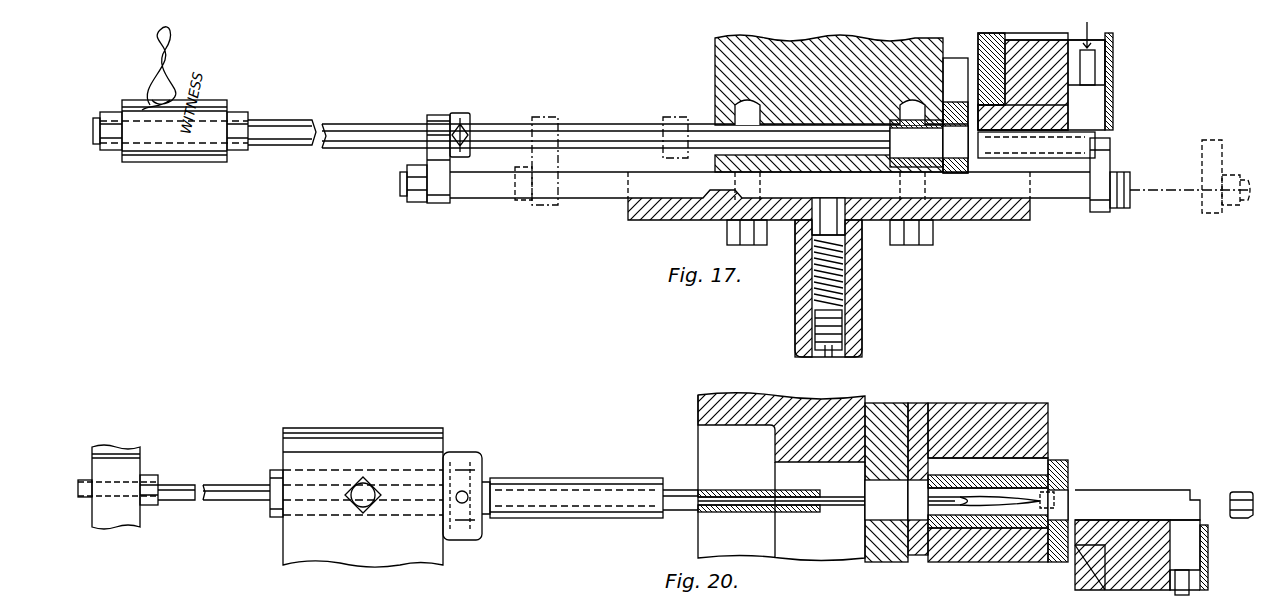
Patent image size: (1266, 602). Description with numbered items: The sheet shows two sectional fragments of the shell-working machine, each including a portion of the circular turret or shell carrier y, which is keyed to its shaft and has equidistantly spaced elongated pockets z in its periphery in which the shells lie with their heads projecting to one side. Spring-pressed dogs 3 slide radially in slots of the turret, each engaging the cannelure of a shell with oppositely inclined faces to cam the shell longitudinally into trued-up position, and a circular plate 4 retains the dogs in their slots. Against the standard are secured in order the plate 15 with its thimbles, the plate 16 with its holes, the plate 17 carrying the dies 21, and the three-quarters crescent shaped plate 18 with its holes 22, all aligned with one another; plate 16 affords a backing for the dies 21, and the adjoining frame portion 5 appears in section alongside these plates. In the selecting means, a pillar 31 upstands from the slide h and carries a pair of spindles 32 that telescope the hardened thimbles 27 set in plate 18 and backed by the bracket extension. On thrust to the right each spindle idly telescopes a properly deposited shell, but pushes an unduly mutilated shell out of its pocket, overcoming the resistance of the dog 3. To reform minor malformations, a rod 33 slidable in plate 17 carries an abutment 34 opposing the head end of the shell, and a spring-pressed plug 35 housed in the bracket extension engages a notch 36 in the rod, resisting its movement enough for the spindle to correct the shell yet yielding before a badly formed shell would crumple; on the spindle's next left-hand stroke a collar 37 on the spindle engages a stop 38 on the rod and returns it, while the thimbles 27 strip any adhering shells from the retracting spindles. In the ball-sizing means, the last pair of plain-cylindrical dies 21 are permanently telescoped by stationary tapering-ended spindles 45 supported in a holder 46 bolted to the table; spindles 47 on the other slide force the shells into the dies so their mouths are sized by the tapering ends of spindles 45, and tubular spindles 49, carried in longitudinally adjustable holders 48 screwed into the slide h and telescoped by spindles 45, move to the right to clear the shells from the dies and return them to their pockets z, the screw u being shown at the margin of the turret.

In FIG. 17, the pillar 31 is at (176, 162).
In FIG. 17, the spindles 32 is at (585, 130).
In FIG. 17, the rod 33 is at (1062, 200).
In FIG. 17, the abutment 34 is at (1112, 160).
In FIG. 17, the spring-pressed plug 35 is at (815, 288).
In FIG. 17, the notch 36 is at (850, 200).
In FIG. 17, the collar 37 is at (462, 113).
In FIG. 17, the stop 38 is at (436, 115).
In FIG. 17, the hardened thimbles 27 is at (905, 118).
In FIG. 17, the plate 18 is at (955, 115).
In FIG. 20, the plate 18 is at (1058, 460).
In FIG. 17, the spring-pressed dogs 3 is at (1041, 76).
In FIG. 20, the spring-pressed dogs 3 is at (1185, 557).
In FIG. 17, the circular plate 4 is at (1113, 110).
In FIG. 20, the circular plate 4 is at (1211, 557).
In FIG. 17, the turret y is at (1034, 77).
In FIG. 20, the turret y is at (1140, 525).
In FIG. 17, the pockets z is at (1033, 113).
In FIG. 20, the pockets z is at (1137, 505).
In FIG. 20, the holder 46 is at (118, 452).
In FIG. 20, the slide h is at (364, 430).
In FIG. 20, the holders 48 is at (563, 520).
In FIG. 20, the tubular spindles 49 is at (760, 513).
In FIG. 20, the spindles 45 is at (846, 511).
In FIG. 20, the frame 5 is at (822, 400).
In FIG. 20, the plate 15 is at (888, 403).
In FIG. 20, the plate 16 is at (921, 403).
In FIG. 20, the plate 17 is at (975, 408).
In FIG. 20, the dies 21 is at (988, 491).
In FIG. 20, the holes 22 is at (1055, 500).
In FIG. 20, the spindles 47 is at (1243, 520).
In FIG. 20, the screw u is at (1144, 595).